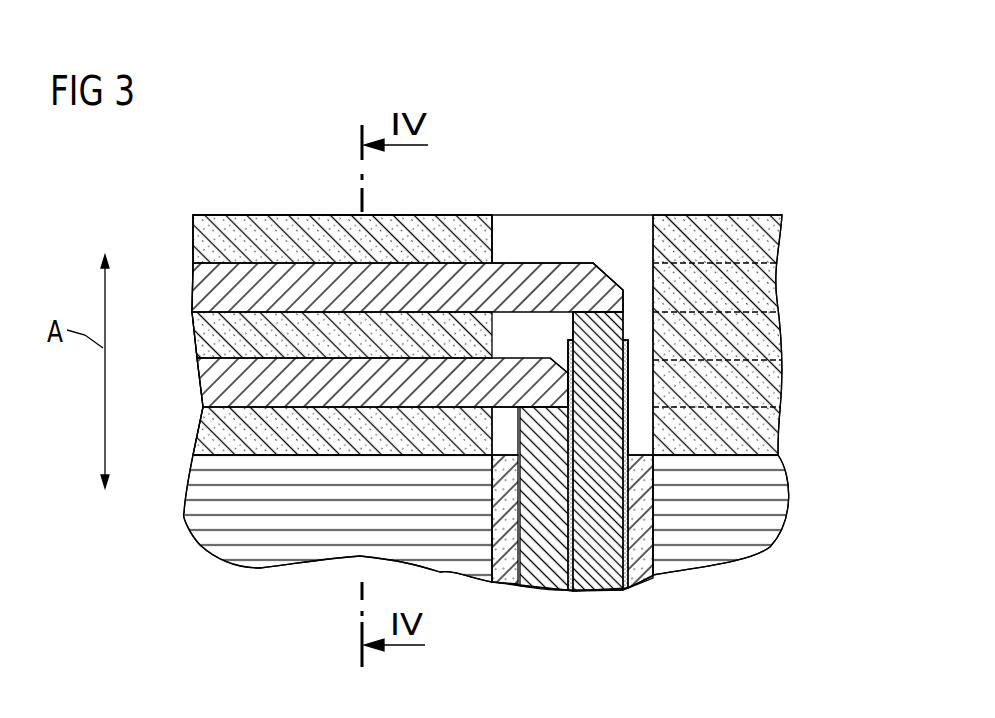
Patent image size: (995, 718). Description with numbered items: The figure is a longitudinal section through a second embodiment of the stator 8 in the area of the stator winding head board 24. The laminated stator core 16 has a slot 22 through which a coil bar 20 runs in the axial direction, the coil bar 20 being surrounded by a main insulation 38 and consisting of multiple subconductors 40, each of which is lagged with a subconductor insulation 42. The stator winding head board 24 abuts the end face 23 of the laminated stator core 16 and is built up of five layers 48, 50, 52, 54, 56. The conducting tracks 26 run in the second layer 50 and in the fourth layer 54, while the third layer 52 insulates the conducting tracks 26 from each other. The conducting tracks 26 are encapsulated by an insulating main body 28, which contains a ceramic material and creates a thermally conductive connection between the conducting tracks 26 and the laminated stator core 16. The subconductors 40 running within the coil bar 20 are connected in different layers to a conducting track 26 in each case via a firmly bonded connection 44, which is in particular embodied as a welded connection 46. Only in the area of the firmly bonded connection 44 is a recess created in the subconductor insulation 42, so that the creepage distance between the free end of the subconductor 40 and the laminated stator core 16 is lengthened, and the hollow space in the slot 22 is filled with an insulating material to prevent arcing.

The stator 8 is at (699, 157).
The laminated stator core 16 is at (258, 537).
The coil bar 20 is at (575, 506).
The slot 22 is at (606, 247).
The end face 23 is at (212, 440).
The stator winding head board 24 is at (305, 248).
The conducting track 26 is at (193, 288).
The insulating main body 28 is at (240, 218).
The main insulation 38 is at (502, 575).
The subconductor 40 is at (542, 573).
The subconductor insulation 42 is at (516, 575).
The firmly bonded connection 44 is at (607, 292).
The welded connection 46 is at (565, 378).
The first layer 48 is at (781, 246).
The second layer 50 is at (780, 286).
The third layer 52 is at (782, 332).
The fourth layer 54 is at (783, 389).
The fifth layer 56 is at (780, 432).